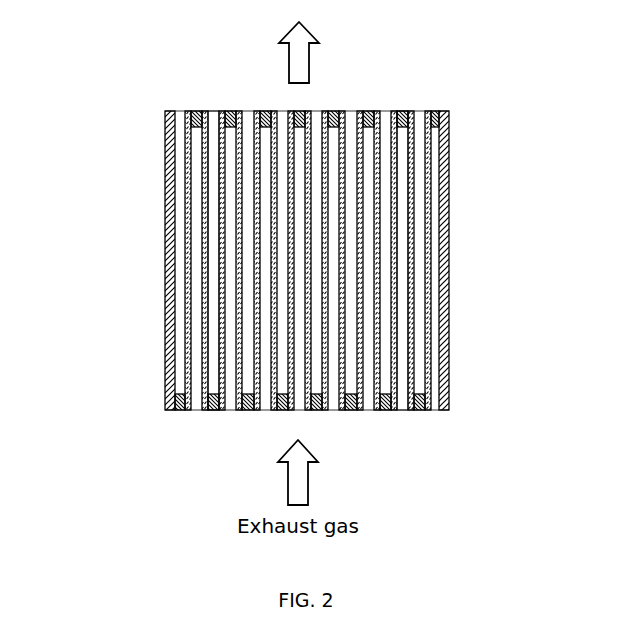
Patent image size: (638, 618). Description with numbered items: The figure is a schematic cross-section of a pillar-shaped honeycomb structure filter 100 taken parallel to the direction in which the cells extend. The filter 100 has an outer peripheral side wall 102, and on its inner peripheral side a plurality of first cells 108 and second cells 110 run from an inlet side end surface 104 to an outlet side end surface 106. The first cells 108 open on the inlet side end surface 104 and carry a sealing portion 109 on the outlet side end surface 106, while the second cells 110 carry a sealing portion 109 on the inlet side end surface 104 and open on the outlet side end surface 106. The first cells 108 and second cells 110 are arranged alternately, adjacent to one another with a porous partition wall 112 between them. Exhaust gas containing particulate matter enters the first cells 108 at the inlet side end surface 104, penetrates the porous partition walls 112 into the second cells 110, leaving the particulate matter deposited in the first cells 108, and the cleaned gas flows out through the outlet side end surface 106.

The pillar-shaped honeycomb structure filter 100 is at (307, 254).
The outer peripheral side wall 102 is at (165, 140).
The inlet side end surface 104 is at (170, 409).
The outlet side end surface 106 is at (448, 110).
The first cells 108 is at (367, 410).
The sealing portion 109 is at (400, 110).
The second cells 110 is at (217, 109).
The porous partition wall 112 is at (188, 223).